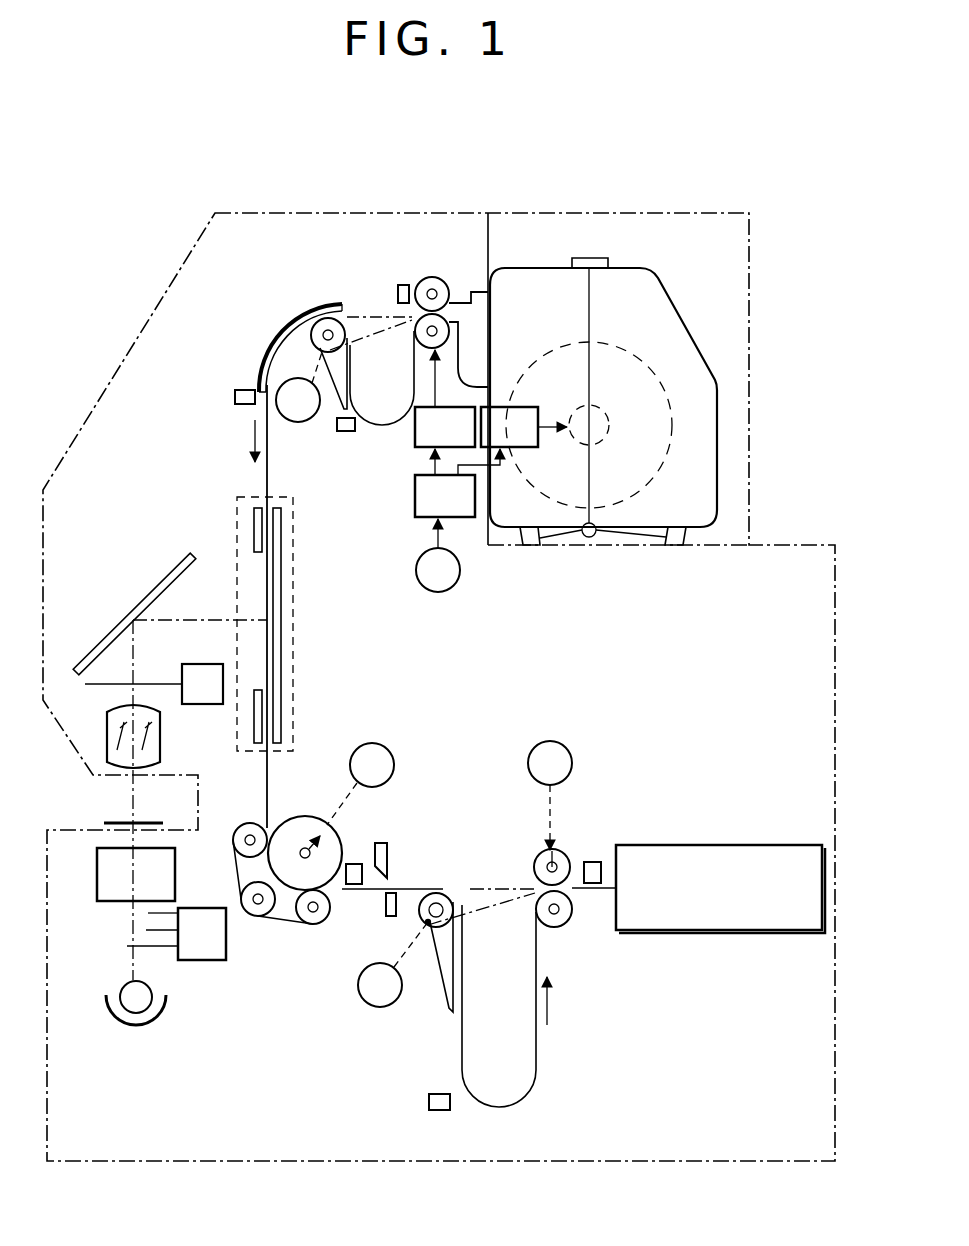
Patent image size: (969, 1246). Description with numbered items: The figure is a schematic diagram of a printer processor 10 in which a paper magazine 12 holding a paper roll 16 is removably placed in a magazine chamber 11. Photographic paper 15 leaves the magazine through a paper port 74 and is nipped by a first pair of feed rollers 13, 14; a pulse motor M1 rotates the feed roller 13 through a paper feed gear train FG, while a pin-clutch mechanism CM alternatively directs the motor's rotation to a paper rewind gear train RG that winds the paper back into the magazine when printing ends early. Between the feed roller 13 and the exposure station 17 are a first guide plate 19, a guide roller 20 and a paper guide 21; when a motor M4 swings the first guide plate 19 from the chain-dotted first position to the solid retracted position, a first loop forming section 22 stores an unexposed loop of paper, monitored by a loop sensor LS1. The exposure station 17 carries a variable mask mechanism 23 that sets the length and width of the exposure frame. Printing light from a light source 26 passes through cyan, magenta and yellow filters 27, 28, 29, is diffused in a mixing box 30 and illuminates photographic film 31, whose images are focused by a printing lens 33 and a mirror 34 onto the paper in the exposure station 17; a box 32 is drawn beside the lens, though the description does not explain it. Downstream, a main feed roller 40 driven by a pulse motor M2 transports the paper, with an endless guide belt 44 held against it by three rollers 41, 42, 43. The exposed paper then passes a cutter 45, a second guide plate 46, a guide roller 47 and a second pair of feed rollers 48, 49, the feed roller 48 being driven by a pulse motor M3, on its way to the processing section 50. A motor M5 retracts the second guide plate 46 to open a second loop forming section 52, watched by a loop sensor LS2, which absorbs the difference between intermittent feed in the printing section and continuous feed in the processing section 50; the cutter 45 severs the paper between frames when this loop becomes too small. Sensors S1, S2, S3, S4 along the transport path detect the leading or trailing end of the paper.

The printer processor 10 is at (465, 1163).
The magazine chamber 11 is at (549, 213).
The paper magazine 12 is at (718, 416).
The feed roller 13 is at (450, 340).
The feed roller 14 is at (436, 277).
The photographic paper 15 is at (267, 478).
The paper roll 16 is at (565, 340).
The exposure station 17 is at (295, 649).
The first guide plate 19 is at (340, 376).
The guide roller 20 is at (337, 320).
The paper guide 21 is at (300, 305).
The first loop forming section 22 is at (398, 427).
The variable mask mechanism 23 is at (254, 540).
The light source 26 is at (136, 1000).
The cyan filter 27 is at (157, 948).
The magenta filter 28 is at (146, 930).
The yellow filter 29 is at (148, 913).
The mixing box 30 is at (97, 873).
The photographic film 31 is at (118, 822).
The lens drive 32 is at (165, 685).
The printing lens 33 is at (107, 735).
The mirror 34 is at (135, 605).
The main feed roller 40 is at (297, 820).
The roller 41 is at (243, 826).
The roller 42 is at (256, 916).
The roller 43 is at (318, 922).
The endless guide belt 44 is at (290, 925).
The cutter 45 is at (390, 868).
The second guide plate 46 is at (446, 980).
The guide roller 47 is at (437, 893).
The feed roller 48 is at (537, 857).
The feed roller 49 is at (567, 920).
The processing section 50 is at (728, 932).
The second loop forming section 52 is at (539, 1075).
The paper port 74 is at (470, 300).
The sensor S1 is at (404, 285).
The sensor S2 is at (240, 392).
The sensor S3 is at (355, 864).
The sensor S4 is at (592, 862).
The loop sensor LS1 is at (345, 432).
The loop sensor LS2 is at (428, 1106).
The pulse motor M1 is at (438, 555).
The pulse motor M2 is at (360, 784).
The pulse motor M3 is at (550, 795).
The motor M4 is at (299, 387).
The motor M5 is at (394, 964).
The paper feed gear train FG is at (445, 427).
The paper rewind gear train RG is at (524, 427).
The pin-clutch mechanism CM is at (457, 483).